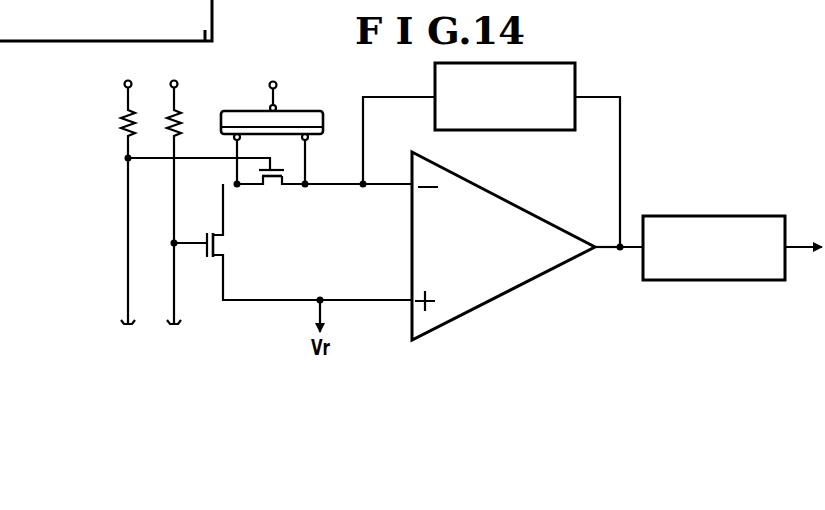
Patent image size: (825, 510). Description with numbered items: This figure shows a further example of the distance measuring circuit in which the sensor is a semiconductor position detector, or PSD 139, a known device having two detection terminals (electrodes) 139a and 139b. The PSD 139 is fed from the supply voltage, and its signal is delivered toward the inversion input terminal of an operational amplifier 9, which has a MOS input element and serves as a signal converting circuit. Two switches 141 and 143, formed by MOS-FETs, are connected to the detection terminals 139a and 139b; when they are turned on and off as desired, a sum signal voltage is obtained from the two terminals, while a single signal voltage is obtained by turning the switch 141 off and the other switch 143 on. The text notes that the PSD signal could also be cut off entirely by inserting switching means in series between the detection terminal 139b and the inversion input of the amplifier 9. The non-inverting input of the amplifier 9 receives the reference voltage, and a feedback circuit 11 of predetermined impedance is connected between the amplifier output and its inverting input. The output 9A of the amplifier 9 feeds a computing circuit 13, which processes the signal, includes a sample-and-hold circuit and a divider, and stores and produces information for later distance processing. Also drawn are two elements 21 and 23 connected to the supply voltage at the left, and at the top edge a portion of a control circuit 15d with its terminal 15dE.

The operational amplifier 9 is at (547, 272).
The output of operational amplifier 9A is at (597, 250).
The feedback circuit 11 is at (552, 130).
The computing circuit 13 is at (737, 215).
The touch control circuit 15d is at (213, 17).
The output terminal of touch control circuit 15dE is at (160, 0).
The resistor 21 is at (122, 122).
The resistor 23 is at (181, 118).
The semiconductor position detector (PSD) 139 is at (290, 110).
The detection terminal 139a is at (234, 141).
The detection terminal 139b is at (308, 141).
The switch 141 is at (268, 187).
The switch 143 is at (218, 243).